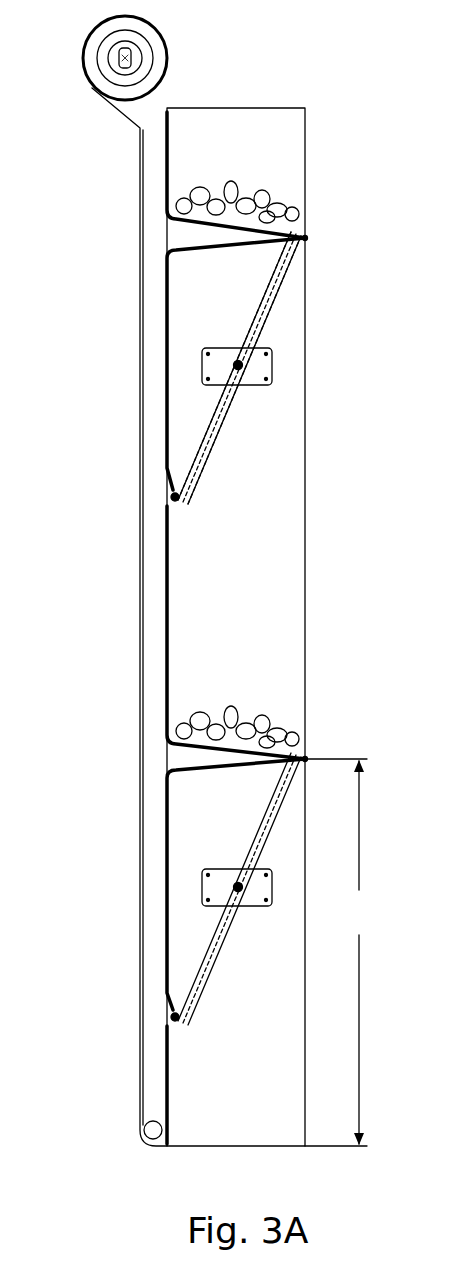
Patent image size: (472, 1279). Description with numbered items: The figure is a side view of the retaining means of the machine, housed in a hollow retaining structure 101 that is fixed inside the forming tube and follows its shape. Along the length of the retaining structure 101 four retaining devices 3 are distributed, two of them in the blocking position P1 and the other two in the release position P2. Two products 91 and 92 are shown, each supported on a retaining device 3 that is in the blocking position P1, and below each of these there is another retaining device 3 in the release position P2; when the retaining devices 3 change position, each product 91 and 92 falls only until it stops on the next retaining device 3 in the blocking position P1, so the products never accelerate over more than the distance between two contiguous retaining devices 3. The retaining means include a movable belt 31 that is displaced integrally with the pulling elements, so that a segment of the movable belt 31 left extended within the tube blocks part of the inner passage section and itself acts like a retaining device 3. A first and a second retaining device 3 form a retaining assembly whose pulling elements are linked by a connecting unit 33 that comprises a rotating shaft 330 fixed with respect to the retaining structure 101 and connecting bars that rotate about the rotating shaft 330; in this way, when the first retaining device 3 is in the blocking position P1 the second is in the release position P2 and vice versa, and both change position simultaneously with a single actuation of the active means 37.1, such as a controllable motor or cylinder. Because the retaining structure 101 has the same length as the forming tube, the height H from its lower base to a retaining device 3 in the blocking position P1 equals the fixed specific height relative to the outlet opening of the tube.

The retaining device 3 is at (213, 262).
The movable belt 31 is at (140, 222).
The connecting unit 33 is at (275, 328).
The rotating shaft 330 is at (238, 365).
The active means 37.1 is at (132, 58).
The product 91 is at (218, 168).
The product 92 is at (250, 710).
The retaining structure 101 is at (270, 157).
The blocking position P1 is at (308, 238).
The release position P2 is at (202, 495).
The height H is at (350, 952).